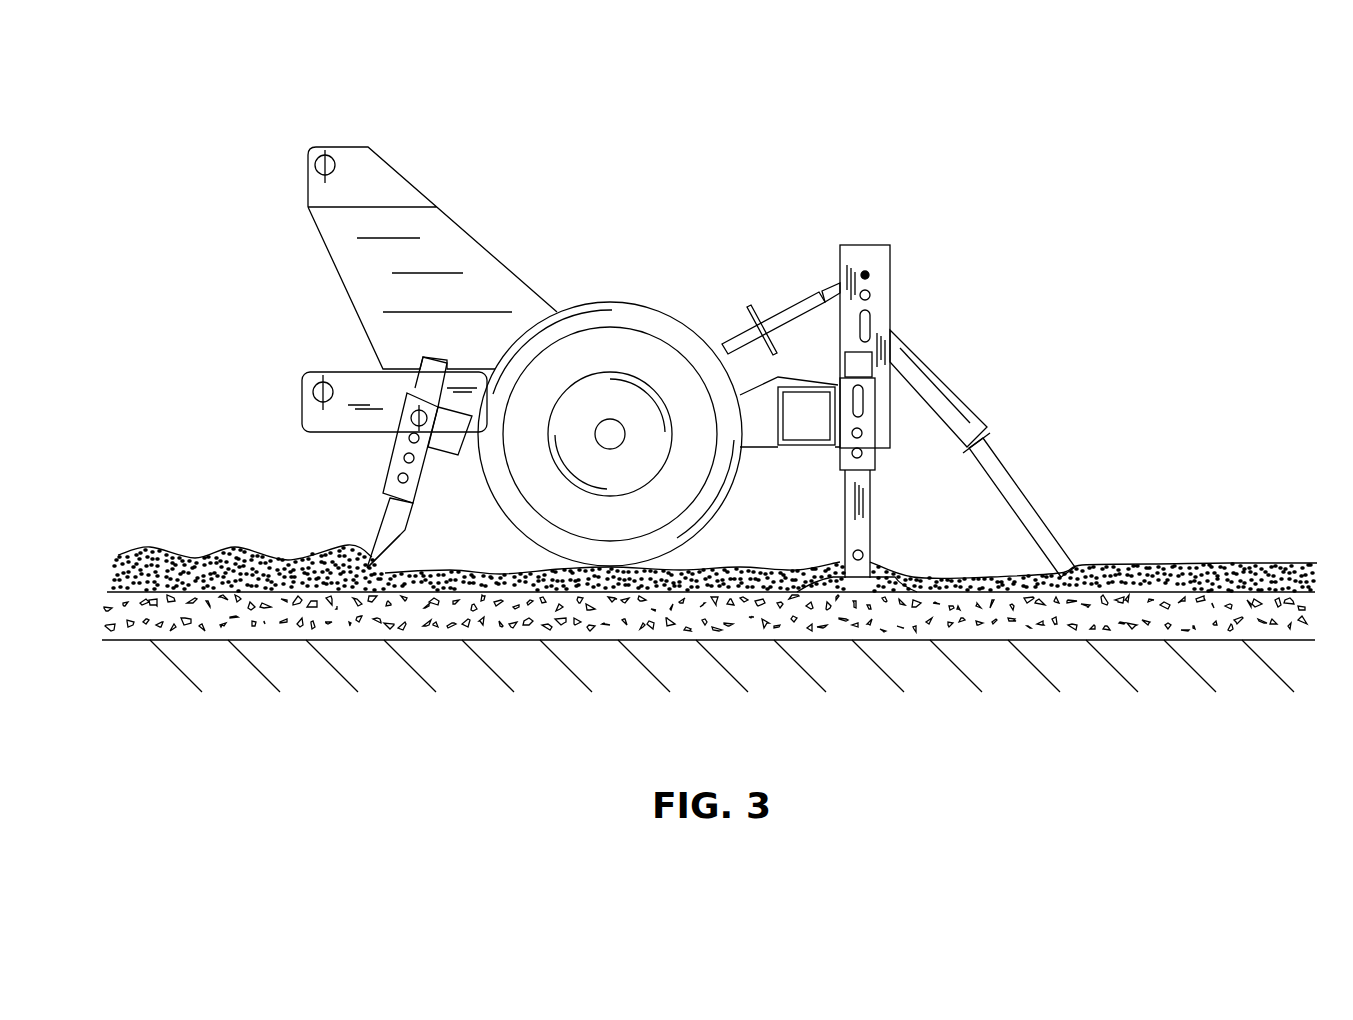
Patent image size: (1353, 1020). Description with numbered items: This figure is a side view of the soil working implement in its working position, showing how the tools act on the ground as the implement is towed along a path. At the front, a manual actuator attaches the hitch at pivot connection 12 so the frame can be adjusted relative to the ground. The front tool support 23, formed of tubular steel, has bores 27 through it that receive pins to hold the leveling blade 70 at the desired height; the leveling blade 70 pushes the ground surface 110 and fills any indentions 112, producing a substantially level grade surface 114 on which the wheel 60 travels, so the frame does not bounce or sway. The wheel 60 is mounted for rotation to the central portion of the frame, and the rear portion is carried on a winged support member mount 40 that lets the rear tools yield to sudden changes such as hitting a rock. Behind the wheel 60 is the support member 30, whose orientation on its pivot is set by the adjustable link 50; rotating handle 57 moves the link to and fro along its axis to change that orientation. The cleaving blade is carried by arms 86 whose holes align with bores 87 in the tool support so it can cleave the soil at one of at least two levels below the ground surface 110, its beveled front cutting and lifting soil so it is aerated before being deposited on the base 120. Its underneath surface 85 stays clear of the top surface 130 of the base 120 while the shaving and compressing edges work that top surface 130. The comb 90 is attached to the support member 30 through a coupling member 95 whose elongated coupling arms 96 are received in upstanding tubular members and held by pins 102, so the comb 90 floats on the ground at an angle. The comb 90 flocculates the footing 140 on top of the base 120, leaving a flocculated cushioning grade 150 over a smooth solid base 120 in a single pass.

The pivot connection 12 is at (315, 163).
The front tool support 23 is at (395, 453).
The bore 27 is at (405, 459).
The support member 30 is at (815, 450).
The winged support member mount 40 is at (763, 412).
The adjustable link 50 is at (881, 325).
The rotating handle 57 is at (762, 308).
The wheel 60 is at (613, 300).
The leveling blade 70 is at (382, 575).
The underneath surface 85 is at (863, 580).
The arm 86 is at (902, 478).
The bore 87 is at (862, 453).
The comb 90 is at (1019, 450).
The coupling member 95 is at (990, 445).
The coupling arm 96 is at (940, 378).
The pin 102 is at (868, 328).
The ground surface 110 is at (157, 547).
The indention 112 is at (287, 560).
The level grade surface 114 is at (760, 567).
The base 120 is at (107, 598).
The top surface 130 is at (1295, 593).
The footing 140 is at (983, 580).
The flocculated cushioning grade 150 is at (1205, 563).